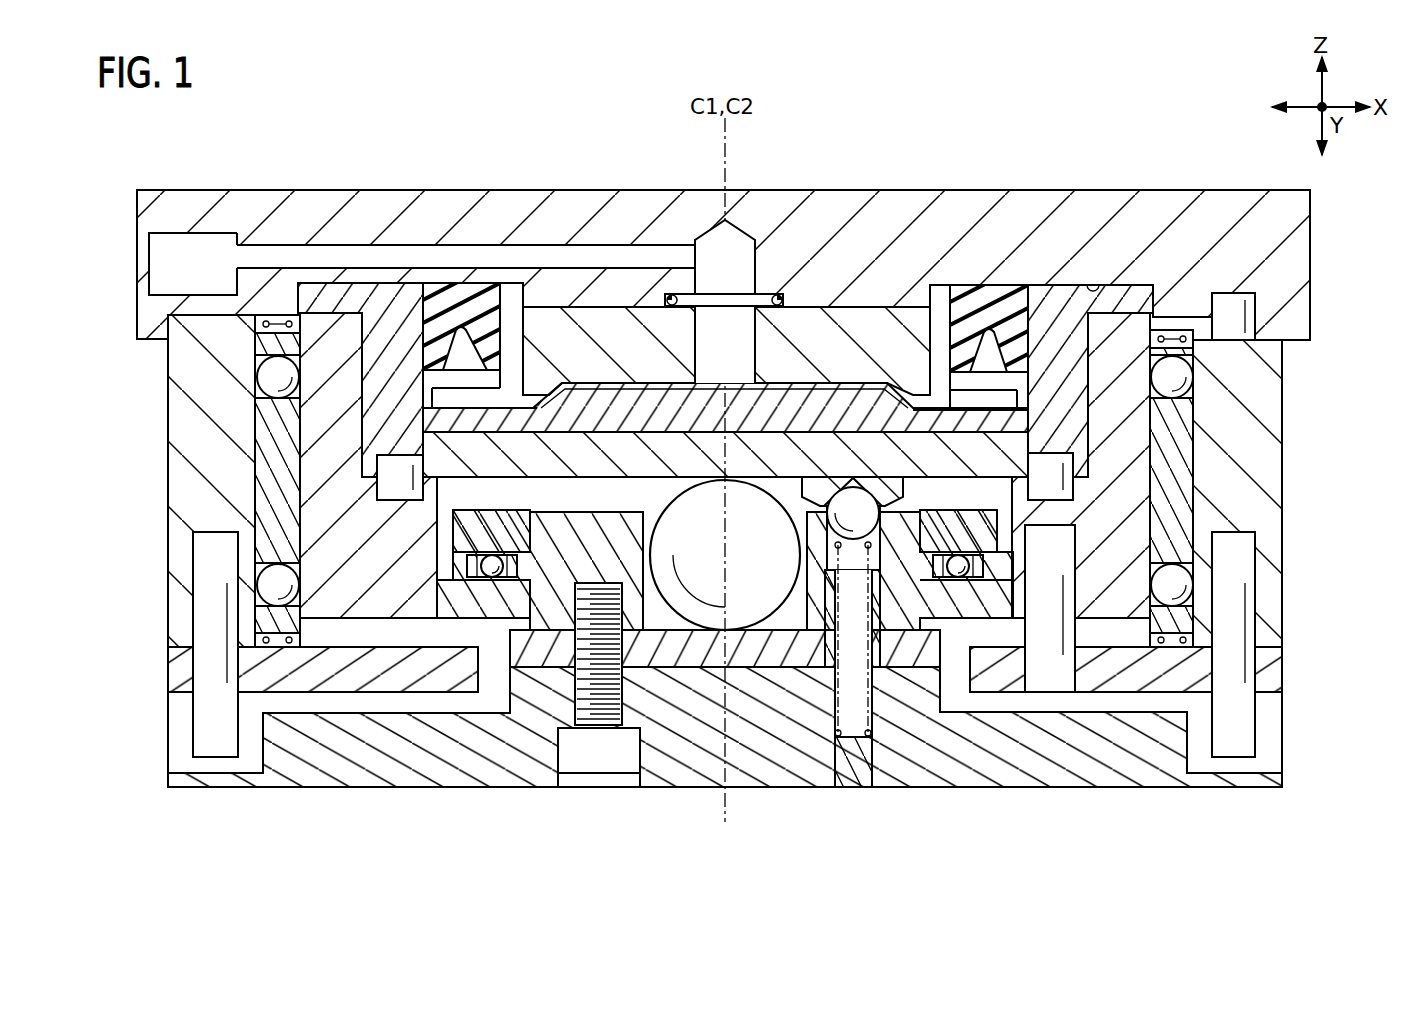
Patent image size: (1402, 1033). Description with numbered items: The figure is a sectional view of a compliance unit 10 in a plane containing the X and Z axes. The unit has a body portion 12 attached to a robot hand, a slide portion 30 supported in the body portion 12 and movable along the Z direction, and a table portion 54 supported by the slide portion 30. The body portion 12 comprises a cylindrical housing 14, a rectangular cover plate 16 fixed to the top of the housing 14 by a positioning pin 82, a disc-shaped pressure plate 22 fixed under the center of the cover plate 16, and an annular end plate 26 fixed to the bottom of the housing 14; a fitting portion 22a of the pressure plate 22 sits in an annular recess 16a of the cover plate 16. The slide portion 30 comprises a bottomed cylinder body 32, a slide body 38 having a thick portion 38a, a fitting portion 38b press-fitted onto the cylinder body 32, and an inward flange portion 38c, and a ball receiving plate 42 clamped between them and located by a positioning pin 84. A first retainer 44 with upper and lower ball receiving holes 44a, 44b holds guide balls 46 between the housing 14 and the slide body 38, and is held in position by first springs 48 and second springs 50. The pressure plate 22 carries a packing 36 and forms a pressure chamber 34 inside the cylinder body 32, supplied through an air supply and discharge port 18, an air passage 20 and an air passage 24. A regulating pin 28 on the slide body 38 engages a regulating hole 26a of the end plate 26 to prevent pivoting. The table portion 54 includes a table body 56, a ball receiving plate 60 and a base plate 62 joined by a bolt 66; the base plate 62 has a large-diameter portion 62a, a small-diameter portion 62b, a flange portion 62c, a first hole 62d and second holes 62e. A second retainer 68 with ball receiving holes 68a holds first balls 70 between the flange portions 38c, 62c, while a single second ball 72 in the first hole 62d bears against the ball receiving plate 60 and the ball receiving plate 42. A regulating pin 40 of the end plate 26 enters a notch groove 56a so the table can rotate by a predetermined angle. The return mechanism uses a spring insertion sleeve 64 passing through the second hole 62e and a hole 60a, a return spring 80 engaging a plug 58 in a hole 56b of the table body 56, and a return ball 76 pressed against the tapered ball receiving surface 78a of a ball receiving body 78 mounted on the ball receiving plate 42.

The compliance unit 10 is at (327, 93).
The body portion 12 is at (1318, 283).
The housing 14 is at (1284, 455).
The cover plate 16 is at (1030, 210).
The recess 16a is at (1098, 288).
The air supply and discharge port 18 is at (160, 250).
The air passage 20 is at (333, 258).
The pressure plate 22 is at (553, 333).
The fitting portion 22a is at (940, 287).
The air passage 24 is at (742, 320).
The end plate 26 is at (1273, 672).
The regulating hole 26a is at (1035, 663).
The regulating pin 28 is at (1060, 670).
The slide portion 30 is at (297, 432).
The cylinder body 32 is at (378, 327).
The pressure chamber 34 is at (430, 405).
The packing 36 is at (453, 298).
The slide body 38 is at (322, 523).
The thick portion 38a is at (327, 560).
The fitting portion 38b is at (315, 370).
The flange portion 38c is at (480, 603).
The regulating pin 40 is at (1245, 707).
The ball receiving plate 42 is at (382, 447).
The first retainer 44 is at (1182, 493).
The upper ball receiving holes 44a is at (1193, 372).
The lower ball receiving holes 44b is at (1153, 588).
The guide balls 46 is at (1167, 375).
The first springs 48 is at (270, 318).
The second springs 50 is at (286, 640).
The table portion 54 is at (417, 789).
The table body 56 is at (335, 768).
The notch groove 56a is at (1270, 760).
The holes 56b is at (835, 733).
The plug 58 is at (852, 768).
The ball receiving plate 60 is at (690, 668).
The holes 60a is at (877, 670).
The base plate 62 is at (533, 508).
The large-diameter portion 62a is at (483, 567).
The small-diameter portion 62b is at (483, 590).
The flange portion 62c is at (463, 532).
The first hole 62d is at (648, 522).
The second holes 62e is at (840, 640).
The spring insertion sleeve 64 is at (832, 578).
The bolt 66 is at (598, 758).
The second retainer 68 is at (985, 570).
The ball receiving holes 68a is at (952, 557).
The first balls 70 is at (1003, 585).
The second ball 72 is at (700, 478).
The return ball 76 is at (840, 515).
The ball receiving body 78 is at (832, 448).
The ball receiving surface 78a is at (823, 477).
The return spring 80 is at (877, 733).
The positioning pin 82 is at (1230, 307).
The positioning pin 84 is at (1045, 467).